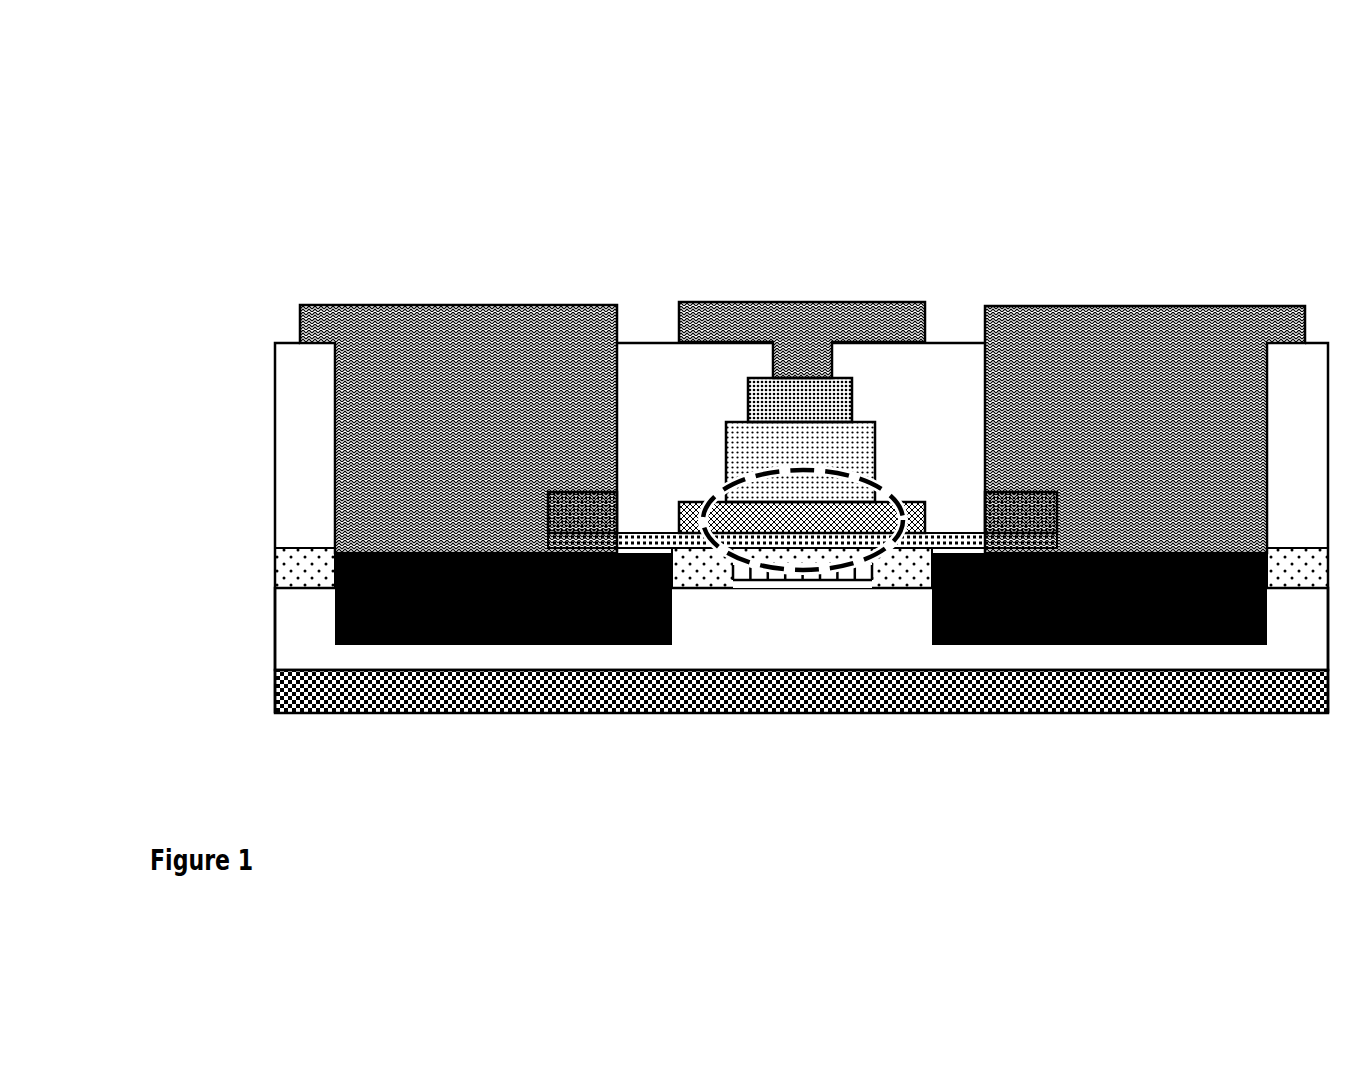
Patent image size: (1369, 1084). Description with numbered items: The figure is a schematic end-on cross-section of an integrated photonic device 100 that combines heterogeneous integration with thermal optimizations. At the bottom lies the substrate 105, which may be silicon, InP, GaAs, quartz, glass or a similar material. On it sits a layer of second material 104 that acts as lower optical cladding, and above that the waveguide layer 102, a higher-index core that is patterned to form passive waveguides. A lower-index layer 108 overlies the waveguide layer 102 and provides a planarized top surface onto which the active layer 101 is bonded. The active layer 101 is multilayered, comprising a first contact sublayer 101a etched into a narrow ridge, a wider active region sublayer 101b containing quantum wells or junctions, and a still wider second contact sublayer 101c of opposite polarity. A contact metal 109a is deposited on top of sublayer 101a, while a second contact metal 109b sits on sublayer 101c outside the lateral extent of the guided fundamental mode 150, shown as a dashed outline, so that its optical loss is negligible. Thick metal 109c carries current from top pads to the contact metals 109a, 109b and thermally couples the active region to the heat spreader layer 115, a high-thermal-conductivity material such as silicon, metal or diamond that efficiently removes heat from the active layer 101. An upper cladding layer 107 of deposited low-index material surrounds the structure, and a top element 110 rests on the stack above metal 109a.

The integrated photonic device 100 is at (150, 172).
The active region layer 101 is at (847, 346).
The first contact sublayer 101a is at (859, 370).
The active region sublayer 101b is at (917, 500).
The second contact sublayer 101c is at (952, 532).
The waveguide layer 102 is at (803, 575).
The second material layer 104 is at (275, 617).
The substrate 105 is at (275, 706).
The upper cladding layer 107 is at (272, 385).
The planarization layer 108 is at (542, 552).
The first contact metal 109a is at (800, 378).
The second contact metal 109b is at (618, 531).
The via metal 109c is at (402, 307).
The top electrode 110 is at (833, 305).
The heat spreader layer 115 is at (543, 645).
The fundamental optical mode 150 is at (828, 567).